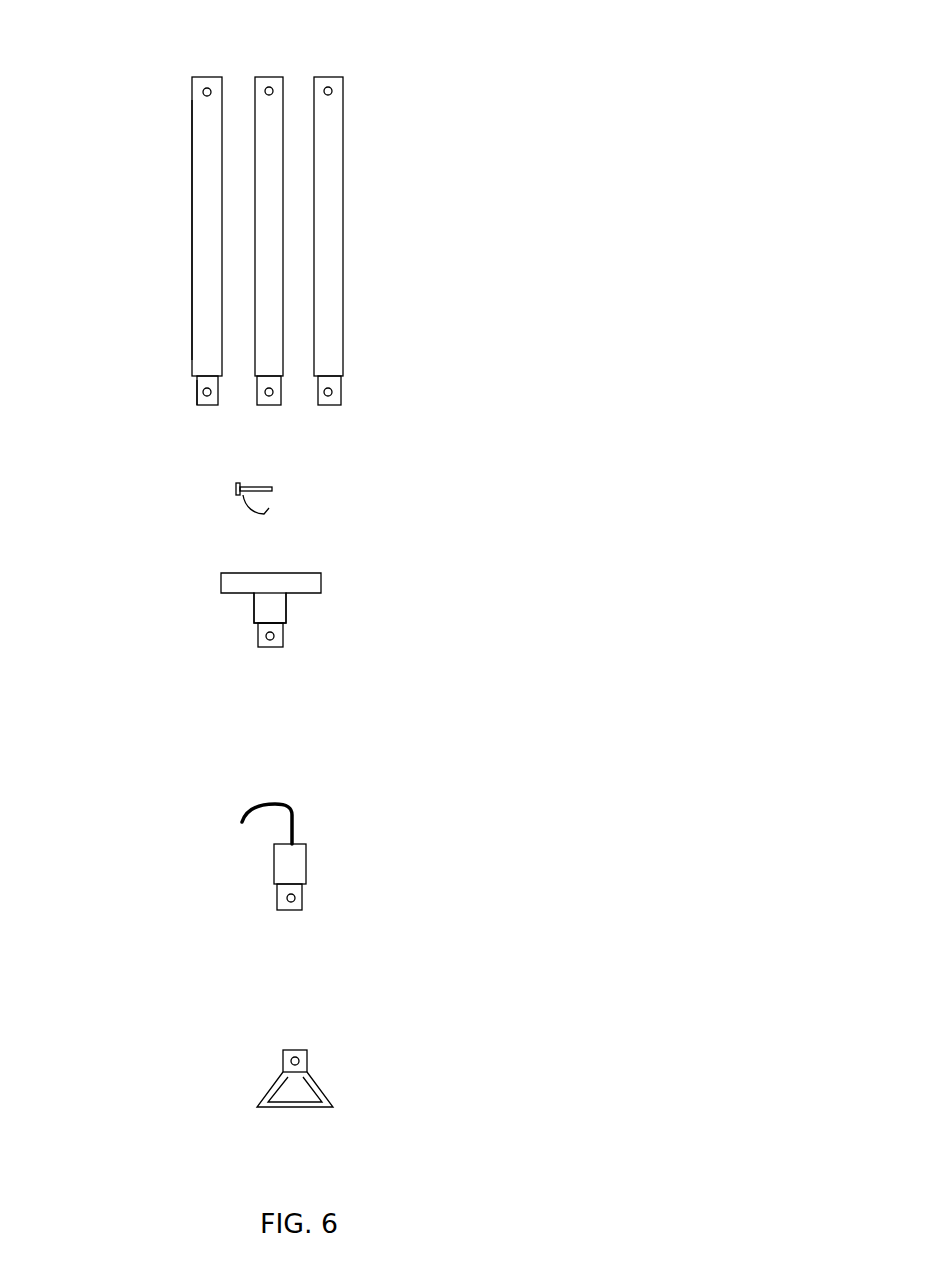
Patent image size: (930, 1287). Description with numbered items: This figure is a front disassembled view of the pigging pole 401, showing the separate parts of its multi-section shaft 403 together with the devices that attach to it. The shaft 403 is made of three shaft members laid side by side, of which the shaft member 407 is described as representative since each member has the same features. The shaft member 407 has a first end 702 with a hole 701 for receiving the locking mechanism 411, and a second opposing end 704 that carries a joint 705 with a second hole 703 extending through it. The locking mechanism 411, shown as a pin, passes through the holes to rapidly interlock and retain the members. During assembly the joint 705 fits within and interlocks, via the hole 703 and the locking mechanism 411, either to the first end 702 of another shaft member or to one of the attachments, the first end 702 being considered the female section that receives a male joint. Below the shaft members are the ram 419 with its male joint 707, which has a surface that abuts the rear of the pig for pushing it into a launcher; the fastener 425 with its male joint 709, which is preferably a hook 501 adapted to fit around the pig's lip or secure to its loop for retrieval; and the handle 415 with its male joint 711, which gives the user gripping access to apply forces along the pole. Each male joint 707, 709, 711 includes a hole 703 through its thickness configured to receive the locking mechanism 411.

The pigging pole 401 is at (506, 31).
The multi-section shaft 403 is at (394, 257).
The second shaft member 407 is at (192, 233).
The locking mechanism 411 is at (298, 484).
The handle 415 is at (356, 1120).
The ram 419 is at (343, 557).
The fastener 425 is at (338, 799).
The hook 501 is at (262, 804).
The hole 701 is at (203, 90).
The first end 702 is at (165, 115).
The second hole 703 is at (205, 390).
The second opposing end 704 is at (164, 346).
The joint 705 is at (197, 398).
The male joint 707 is at (258, 638).
The male joint 709 is at (277, 898).
The male joint 711 is at (283, 1061).